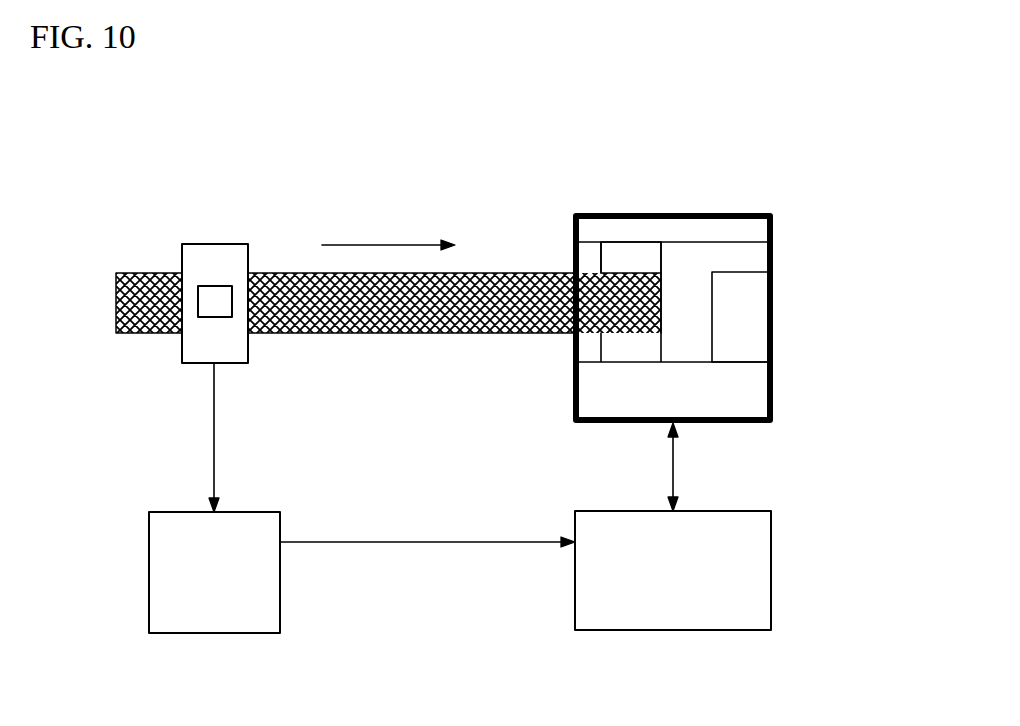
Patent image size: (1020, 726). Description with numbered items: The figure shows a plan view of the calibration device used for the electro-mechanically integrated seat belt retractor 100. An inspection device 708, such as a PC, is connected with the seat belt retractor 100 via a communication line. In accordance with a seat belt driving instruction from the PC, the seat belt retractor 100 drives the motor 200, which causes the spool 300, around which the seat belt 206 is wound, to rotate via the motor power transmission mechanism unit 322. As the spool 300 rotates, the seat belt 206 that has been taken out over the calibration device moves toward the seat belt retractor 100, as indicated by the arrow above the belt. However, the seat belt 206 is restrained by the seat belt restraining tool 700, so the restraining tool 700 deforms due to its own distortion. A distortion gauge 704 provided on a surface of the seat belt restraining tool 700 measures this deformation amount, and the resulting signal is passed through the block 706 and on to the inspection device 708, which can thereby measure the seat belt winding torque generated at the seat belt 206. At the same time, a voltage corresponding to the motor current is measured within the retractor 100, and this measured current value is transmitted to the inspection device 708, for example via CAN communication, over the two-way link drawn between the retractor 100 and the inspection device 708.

The electro-mechanically integrated seat belt retractor 100 is at (707, 203).
The motor 200 is at (755, 318).
The seat belt 206 is at (275, 287).
The spool 300 is at (625, 262).
The motor power transmission mechanism unit 322 is at (733, 397).
The seat belt restraining tool 700 is at (200, 258).
The distortion gauge 704 is at (208, 305).
The detection circuit 706 is at (215, 574).
The inspection device 708 is at (740, 583).